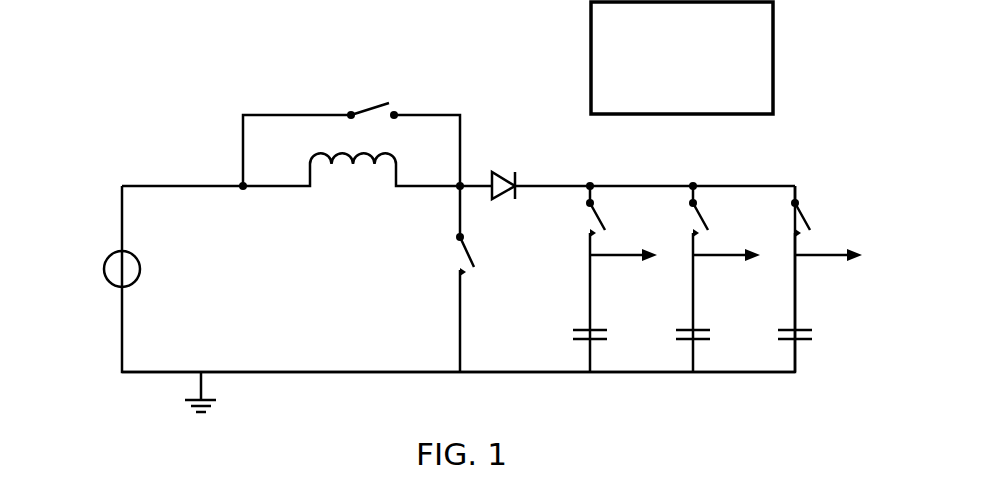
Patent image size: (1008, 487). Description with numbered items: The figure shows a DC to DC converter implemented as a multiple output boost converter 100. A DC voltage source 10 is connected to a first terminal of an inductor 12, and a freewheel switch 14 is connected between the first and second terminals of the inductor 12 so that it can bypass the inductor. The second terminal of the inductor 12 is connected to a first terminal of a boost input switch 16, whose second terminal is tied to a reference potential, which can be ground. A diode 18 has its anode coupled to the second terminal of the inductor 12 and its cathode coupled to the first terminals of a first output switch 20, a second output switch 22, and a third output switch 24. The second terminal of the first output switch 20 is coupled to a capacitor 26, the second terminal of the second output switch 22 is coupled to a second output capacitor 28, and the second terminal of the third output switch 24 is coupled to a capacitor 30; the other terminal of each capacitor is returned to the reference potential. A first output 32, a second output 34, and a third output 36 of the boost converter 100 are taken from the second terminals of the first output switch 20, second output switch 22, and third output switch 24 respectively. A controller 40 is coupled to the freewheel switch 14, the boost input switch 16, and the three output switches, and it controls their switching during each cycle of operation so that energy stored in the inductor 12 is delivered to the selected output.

The DC voltage source 10 is at (104, 270).
The inductor 12 is at (308, 177).
The freewheel switch 14 is at (374, 108).
The boost input switch 16 is at (468, 270).
The diode 18 is at (507, 176).
The first output switch 20 is at (599, 211).
The second output switch 22 is at (702, 211).
The third output switch 24 is at (804, 211).
The capacitor 26 is at (607, 337).
The second output capacitor 28 is at (710, 337).
The capacitor 30 is at (812, 337).
The first output 32 is at (620, 262).
The second output 34 is at (723, 262).
The third output 36 is at (828, 262).
The controller 40 is at (680, 58).
The multiple output boost converter 100 is at (507, 412).